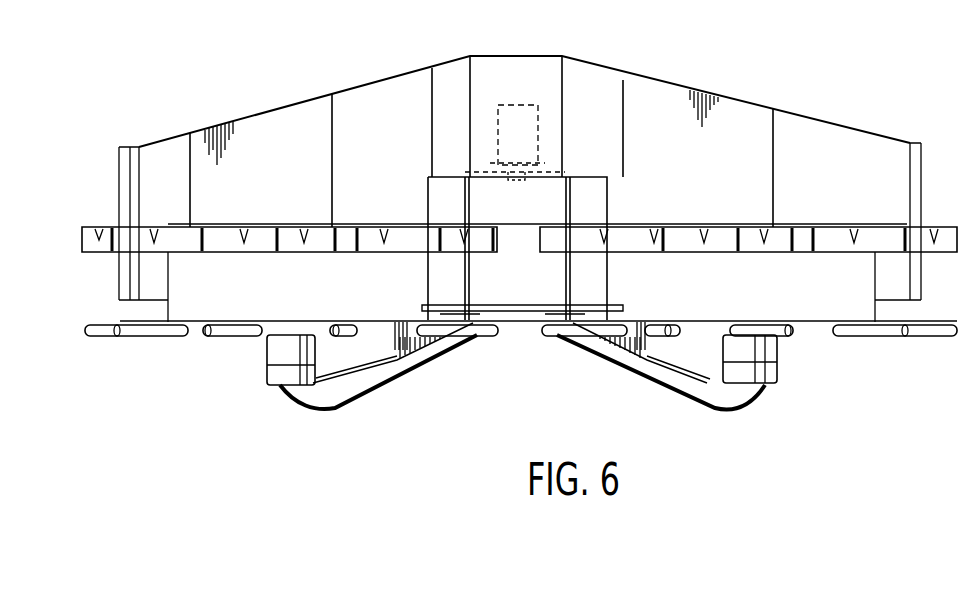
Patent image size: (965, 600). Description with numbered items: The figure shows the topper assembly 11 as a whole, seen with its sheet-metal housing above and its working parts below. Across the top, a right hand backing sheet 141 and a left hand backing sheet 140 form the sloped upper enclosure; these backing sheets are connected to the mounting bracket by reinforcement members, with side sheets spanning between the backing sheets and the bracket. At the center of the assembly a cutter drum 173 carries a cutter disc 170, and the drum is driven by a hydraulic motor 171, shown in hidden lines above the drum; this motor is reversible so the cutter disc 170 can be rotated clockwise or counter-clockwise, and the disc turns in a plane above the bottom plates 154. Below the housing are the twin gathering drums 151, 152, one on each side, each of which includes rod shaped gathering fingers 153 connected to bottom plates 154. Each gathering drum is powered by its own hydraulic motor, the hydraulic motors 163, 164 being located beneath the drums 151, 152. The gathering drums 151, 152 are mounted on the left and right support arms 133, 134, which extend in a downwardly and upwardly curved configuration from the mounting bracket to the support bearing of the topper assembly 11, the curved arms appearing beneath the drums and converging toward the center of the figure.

The topper assembly 11 is at (620, 106).
The right hand backing sheet 141 is at (241, 118).
The left hand backing sheet 140 is at (797, 117).
The hydraulic motor 171 is at (512, 105).
The cutter drum 173 is at (465, 210).
The gathering drum 152 is at (167, 313).
The gathering drum 151 is at (878, 305).
The rod shaped gathering fingers 153 is at (222, 338).
The bottom plates 154 is at (323, 338).
The hydraulic motor 164 is at (266, 382).
The hydraulic motor 163 is at (767, 385).
The left arm pipe (support arm) 133 is at (366, 385).
The right arm pipe (support arm) 134 is at (686, 402).
The cutter disc 170 is at (516, 318).